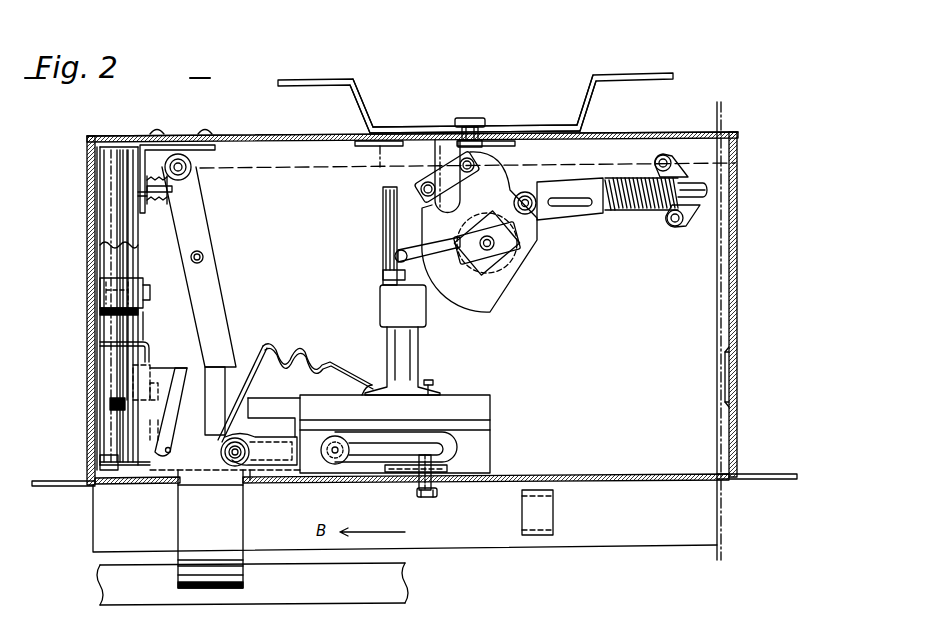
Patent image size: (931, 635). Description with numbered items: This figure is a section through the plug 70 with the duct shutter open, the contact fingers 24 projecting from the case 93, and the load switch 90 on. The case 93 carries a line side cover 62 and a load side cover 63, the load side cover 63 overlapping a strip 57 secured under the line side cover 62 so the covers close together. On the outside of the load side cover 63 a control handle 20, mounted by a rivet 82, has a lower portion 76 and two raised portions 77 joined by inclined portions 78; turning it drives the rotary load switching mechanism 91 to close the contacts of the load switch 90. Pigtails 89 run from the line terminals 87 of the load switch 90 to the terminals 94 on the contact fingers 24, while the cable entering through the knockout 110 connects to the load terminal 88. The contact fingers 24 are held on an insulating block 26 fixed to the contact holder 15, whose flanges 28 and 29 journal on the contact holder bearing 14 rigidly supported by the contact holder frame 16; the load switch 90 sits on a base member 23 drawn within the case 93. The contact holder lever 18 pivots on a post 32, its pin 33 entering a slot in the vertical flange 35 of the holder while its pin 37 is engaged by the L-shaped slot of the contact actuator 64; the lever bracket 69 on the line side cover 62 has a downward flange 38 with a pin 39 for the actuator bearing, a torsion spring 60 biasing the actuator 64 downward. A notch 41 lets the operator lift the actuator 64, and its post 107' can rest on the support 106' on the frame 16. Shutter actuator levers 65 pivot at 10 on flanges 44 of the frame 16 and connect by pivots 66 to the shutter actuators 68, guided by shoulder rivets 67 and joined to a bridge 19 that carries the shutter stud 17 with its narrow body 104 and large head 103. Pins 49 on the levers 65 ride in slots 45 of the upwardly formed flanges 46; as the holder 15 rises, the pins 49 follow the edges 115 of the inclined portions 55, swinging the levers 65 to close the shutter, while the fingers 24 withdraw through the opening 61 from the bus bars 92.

The pivot 10 is at (179, 160).
The contact holder bearing 14 is at (105, 393).
The contact holder 15 is at (195, 478).
The contact holder frame 16 is at (95, 176).
The shutter stud 17 is at (416, 502).
The contact holder lever 18 is at (146, 311).
The bridge 19 is at (405, 472).
The control handle 20 is at (475, 95).
The base block 23 is at (473, 395).
The contact fingers 24 is at (244, 582).
The insulating block 26 is at (256, 407).
The flange 28 is at (100, 458).
The flange 29 is at (112, 342).
The post 32 is at (105, 300).
The pin 33 is at (159, 389).
The vertical flange 35 is at (162, 341).
The pin 37 is at (148, 365).
The downwardly extending flange 38 is at (156, 177).
The pin 39 is at (140, 194).
The notch 41 is at (112, 247).
The flanges 44 is at (128, 228).
The slots 45 is at (160, 455).
The upwardly formed flanges 46 is at (225, 392).
The pins 49 is at (204, 257).
The inclined portions 55 is at (160, 428).
The strip 57 is at (368, 146).
The torsion spring 60 is at (163, 200).
The opening 61 is at (250, 482).
The line side cover 62 is at (283, 135).
The load side cover 63 is at (638, 133).
The contact actuator 64 is at (138, 320).
The shutter actuator levers 65 is at (213, 236).
The pivots 66 is at (235, 462).
The shoulder rivets 67 is at (336, 458).
The shutter actuator 68 is at (272, 437).
The lever bracket 69 is at (215, 148).
The plug 70 is at (739, 117).
The lower portion 76 is at (412, 127).
The raised portions 77 is at (311, 79).
The inclined portions 78 is at (360, 108).
The rivet 82 is at (470, 118).
The line terminals 87 is at (371, 383).
The load terminal 88 is at (432, 382).
The pigtails 89 is at (306, 356).
The load switch 90 is at (380, 302).
The load switching mechanism 91 is at (510, 297).
The bus bars 92 is at (406, 583).
The case 93 is at (654, 333).
The terminals 94 is at (48, 487).
The large head 103 is at (428, 498).
The narrow body 104 is at (440, 488).
The support 106' is at (80, 306).
The post 107' is at (88, 412).
The knockout 110 is at (738, 369).
The edges 115 is at (170, 452).